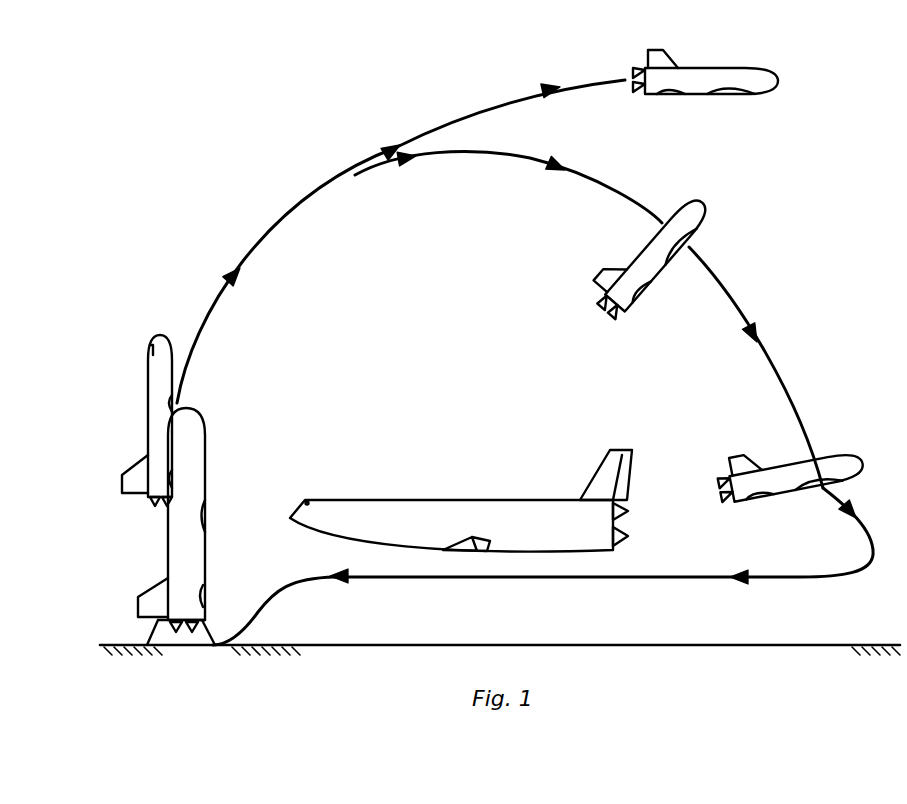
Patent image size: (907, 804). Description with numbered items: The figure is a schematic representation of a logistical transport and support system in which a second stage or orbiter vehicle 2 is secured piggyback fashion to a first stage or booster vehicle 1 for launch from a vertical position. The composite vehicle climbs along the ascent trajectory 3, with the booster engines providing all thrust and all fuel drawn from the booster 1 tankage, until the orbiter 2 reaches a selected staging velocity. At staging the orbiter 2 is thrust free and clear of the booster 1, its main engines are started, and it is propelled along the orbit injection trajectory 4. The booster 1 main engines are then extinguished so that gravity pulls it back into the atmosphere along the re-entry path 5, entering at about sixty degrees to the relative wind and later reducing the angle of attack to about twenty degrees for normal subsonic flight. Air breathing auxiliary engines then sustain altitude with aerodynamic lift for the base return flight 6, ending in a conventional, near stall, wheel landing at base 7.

The booster vehicle 1 is at (180, 533).
The orbiter vehicle 2 is at (150, 418).
The ascent trajectory 3 is at (258, 245).
The orbit injection trajectory 4 is at (477, 110).
The re-entry path 5 is at (452, 156).
The base return flight 6 is at (632, 578).
The base 7 is at (181, 647).